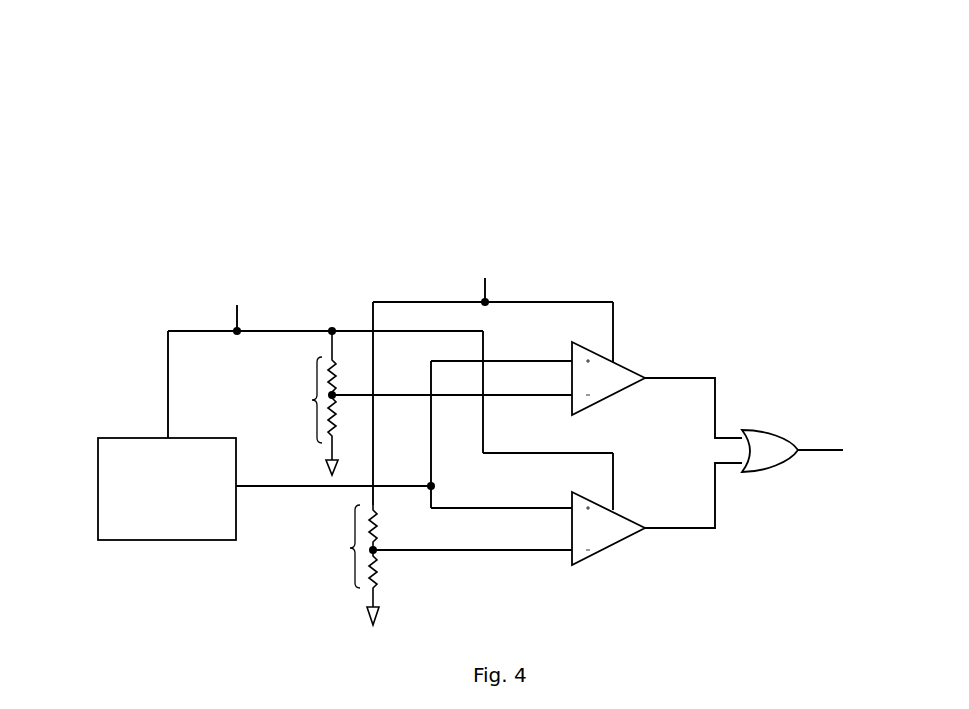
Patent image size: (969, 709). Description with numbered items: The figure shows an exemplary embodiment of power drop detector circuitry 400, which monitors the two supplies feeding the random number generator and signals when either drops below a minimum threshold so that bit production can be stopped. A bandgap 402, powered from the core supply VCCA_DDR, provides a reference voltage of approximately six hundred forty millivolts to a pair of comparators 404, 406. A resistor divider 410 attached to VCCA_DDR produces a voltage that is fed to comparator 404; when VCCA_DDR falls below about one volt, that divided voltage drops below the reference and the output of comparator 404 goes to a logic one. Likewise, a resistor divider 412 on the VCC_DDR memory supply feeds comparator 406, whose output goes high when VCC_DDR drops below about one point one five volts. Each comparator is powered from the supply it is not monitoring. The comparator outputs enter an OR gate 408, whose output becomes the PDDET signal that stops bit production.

The power drop detector circuitry 400 is at (310, 102).
The bandgap 402 is at (112, 478).
The comparator 404 is at (613, 377).
The comparator 406 is at (610, 528).
The OR gate 408 is at (760, 467).
The resistor divider 410 is at (300, 400).
The resistor divider 412 is at (345, 548).